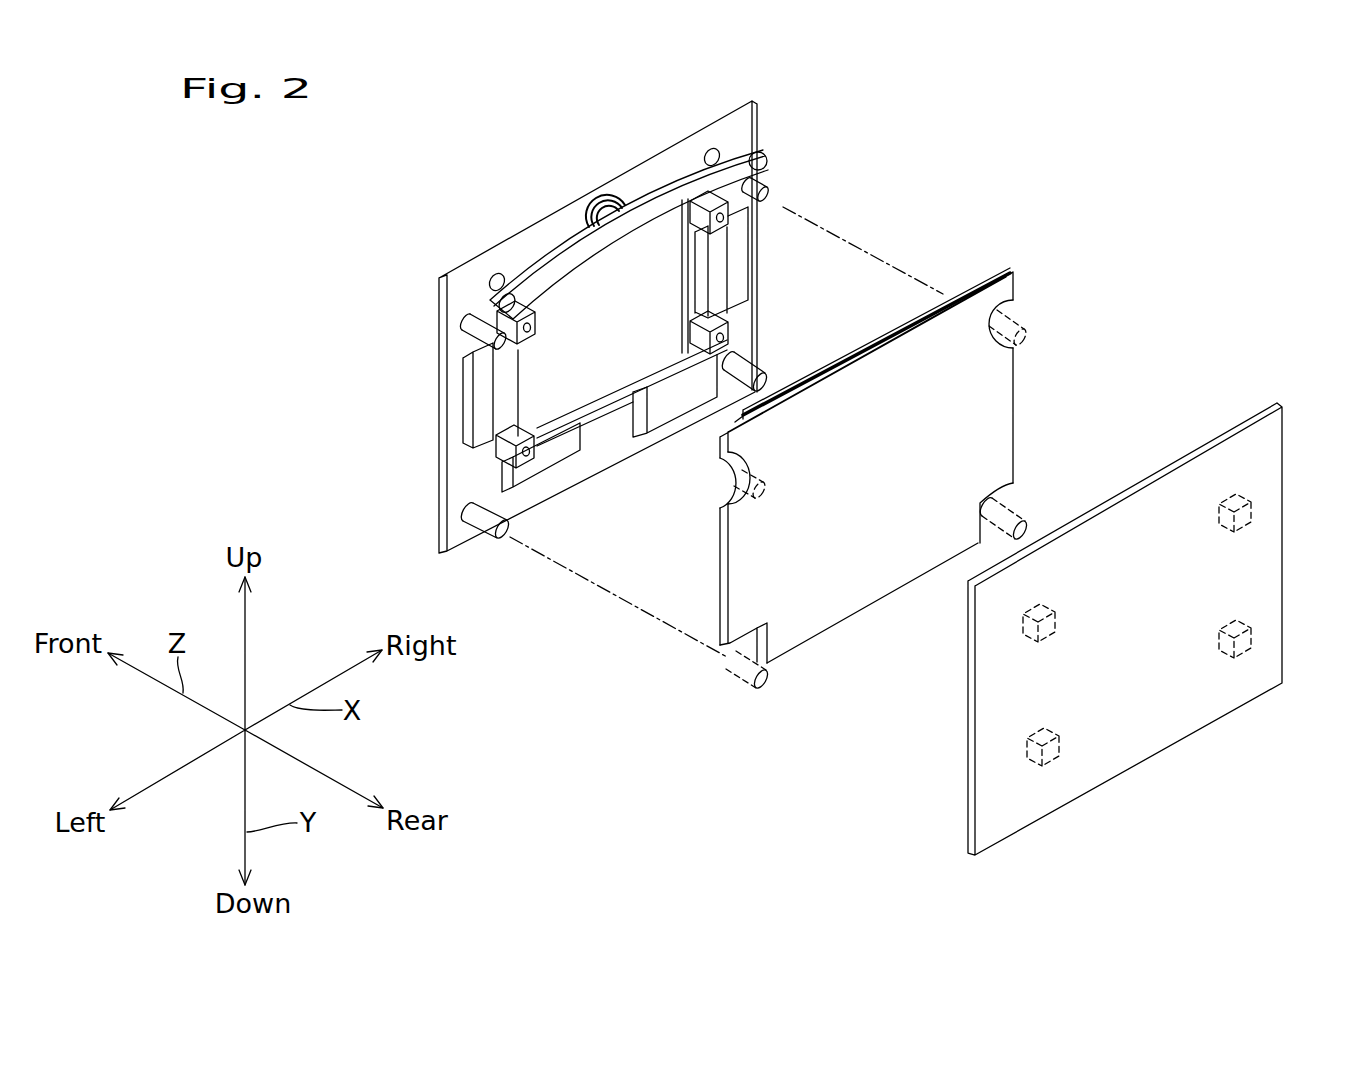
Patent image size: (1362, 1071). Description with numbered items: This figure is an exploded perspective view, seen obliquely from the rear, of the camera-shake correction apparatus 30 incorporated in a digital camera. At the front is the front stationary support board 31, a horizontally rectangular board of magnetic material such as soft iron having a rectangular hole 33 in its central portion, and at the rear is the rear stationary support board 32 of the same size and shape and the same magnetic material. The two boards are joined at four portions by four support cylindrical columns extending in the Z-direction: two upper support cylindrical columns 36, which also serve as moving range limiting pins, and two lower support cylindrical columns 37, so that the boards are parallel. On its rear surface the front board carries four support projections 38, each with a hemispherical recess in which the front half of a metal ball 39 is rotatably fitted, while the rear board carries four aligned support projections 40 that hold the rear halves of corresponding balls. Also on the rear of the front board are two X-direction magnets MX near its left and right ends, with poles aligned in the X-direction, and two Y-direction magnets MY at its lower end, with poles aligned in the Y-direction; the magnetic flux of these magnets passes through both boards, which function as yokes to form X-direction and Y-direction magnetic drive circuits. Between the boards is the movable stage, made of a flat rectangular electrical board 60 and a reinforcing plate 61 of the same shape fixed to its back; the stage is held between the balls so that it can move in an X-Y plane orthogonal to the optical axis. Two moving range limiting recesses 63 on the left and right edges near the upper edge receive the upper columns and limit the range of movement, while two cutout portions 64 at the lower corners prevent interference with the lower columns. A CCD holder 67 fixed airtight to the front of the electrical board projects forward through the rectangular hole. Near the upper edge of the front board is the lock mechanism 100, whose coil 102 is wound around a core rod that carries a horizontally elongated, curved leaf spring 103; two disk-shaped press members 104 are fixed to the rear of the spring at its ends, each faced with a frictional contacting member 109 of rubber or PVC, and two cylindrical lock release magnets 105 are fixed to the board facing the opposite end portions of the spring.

The camera-shake correction apparatus 30 is at (935, 232).
The front stationary support board 31 is at (462, 293).
The rear stationary support board 32 is at (1122, 629).
The rectangular hole 33 is at (680, 267).
The upper support cylindrical columns 36 is at (470, 330).
The lower support cylindrical columns 37 is at (486, 538).
The support projections 38 is at (693, 213).
The metal ball 39 is at (717, 208).
The support projections 40 is at (1253, 638).
The electrical board 60 is at (874, 470).
The reinforcing plate 61 is at (1003, 430).
The moving range limiting recesses 63 is at (1013, 318).
The cutout portions 64 is at (1005, 492).
The CCD holder 67 is at (860, 345).
The lock mechanism 100 is at (659, 185).
The coil 102 is at (590, 210).
The leaf spring 103 is at (652, 196).
The press members 104 is at (513, 307).
The frictional contacting member 109 is at (768, 160).
The lock release magnets 105 is at (709, 150).
The X-direction magnets MX is at (750, 248).
The Y-direction magnets MY is at (665, 412).